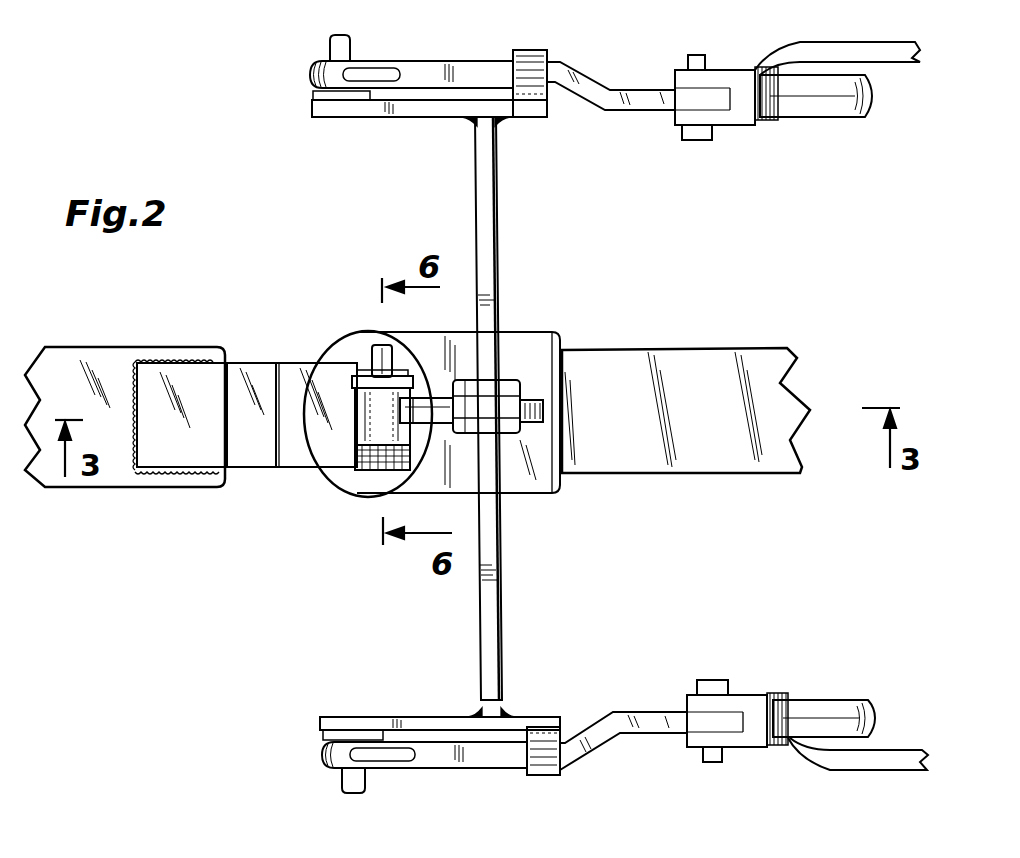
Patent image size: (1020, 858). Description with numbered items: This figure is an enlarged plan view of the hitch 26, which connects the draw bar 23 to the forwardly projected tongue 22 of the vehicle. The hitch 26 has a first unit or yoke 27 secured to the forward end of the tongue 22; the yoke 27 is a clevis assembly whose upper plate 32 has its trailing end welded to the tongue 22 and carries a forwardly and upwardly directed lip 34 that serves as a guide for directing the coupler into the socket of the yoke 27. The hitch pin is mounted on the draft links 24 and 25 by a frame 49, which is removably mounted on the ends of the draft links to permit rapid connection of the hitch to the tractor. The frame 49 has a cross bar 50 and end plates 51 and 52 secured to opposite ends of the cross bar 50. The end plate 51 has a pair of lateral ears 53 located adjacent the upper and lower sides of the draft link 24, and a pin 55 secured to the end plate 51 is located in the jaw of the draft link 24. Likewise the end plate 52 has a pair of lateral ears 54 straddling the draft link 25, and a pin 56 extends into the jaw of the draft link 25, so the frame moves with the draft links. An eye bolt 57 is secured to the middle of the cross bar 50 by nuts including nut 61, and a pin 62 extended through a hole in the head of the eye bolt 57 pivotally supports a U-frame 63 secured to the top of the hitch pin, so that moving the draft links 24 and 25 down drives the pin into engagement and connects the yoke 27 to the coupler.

The tongue 22 is at (78, 488).
The draw bar 23 is at (630, 348).
The draft link 24 is at (640, 92).
The draft link 25 is at (637, 710).
The hitch 26 is at (440, 428).
The yoke 27 is at (305, 448).
The upper plate 32 is at (250, 455).
The lip 34 is at (537, 328).
The frame 49 is at (526, 417).
The cross bar 50 is at (490, 272).
The end plate 51 is at (402, 108).
The end plate 52 is at (410, 724).
The lateral ears 53 is at (528, 55).
The lateral ears 54 is at (540, 772).
The pin 55 is at (343, 46).
The pin 56 is at (343, 777).
The eye bolt 57 is at (430, 440).
The nut 61 is at (508, 385).
The pin 62 is at (373, 470).
The U-frame 63 is at (350, 367).